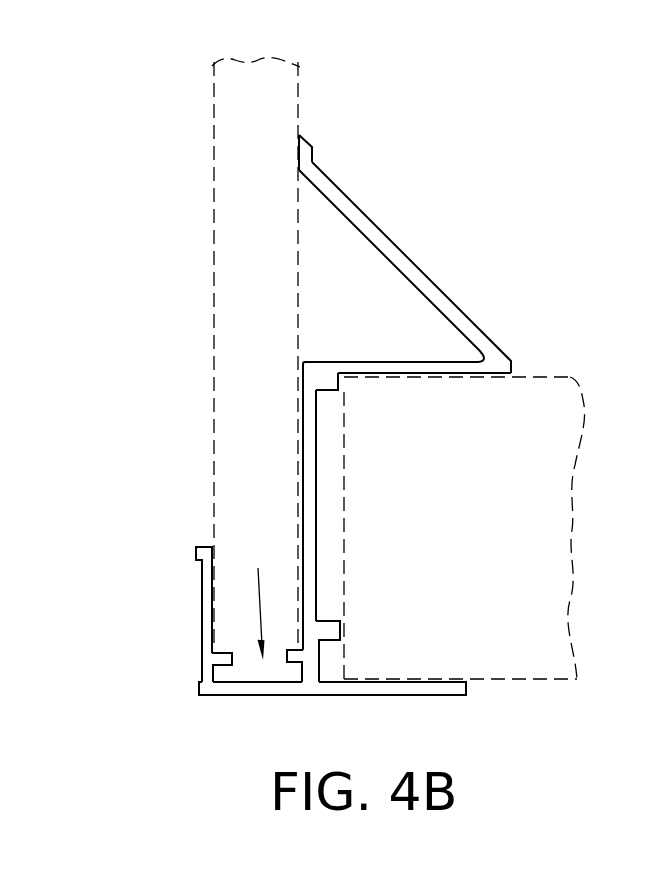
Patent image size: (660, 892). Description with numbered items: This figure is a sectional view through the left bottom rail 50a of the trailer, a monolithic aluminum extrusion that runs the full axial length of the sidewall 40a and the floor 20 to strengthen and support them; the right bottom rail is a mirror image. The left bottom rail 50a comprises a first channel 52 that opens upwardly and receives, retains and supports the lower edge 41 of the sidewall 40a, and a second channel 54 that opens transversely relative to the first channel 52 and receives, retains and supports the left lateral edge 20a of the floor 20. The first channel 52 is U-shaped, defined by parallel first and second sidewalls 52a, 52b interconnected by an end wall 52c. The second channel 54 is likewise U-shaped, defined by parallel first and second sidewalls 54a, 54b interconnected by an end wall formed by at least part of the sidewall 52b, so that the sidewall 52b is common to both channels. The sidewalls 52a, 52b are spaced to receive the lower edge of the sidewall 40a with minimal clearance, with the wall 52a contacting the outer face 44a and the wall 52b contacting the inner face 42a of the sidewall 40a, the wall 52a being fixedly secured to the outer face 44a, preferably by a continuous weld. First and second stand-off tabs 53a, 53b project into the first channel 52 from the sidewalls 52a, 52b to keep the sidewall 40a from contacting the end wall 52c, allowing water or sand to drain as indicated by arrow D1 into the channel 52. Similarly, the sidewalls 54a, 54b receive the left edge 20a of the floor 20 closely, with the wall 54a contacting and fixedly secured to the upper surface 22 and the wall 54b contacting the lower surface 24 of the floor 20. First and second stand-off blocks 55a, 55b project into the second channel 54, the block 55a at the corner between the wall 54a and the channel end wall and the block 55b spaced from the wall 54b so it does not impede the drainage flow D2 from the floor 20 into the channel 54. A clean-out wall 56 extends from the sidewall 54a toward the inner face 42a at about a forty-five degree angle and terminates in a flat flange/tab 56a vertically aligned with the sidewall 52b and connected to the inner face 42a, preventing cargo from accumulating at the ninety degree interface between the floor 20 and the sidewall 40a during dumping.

The floor 20 is at (562, 700).
The left lateral edge of the floor 20a is at (497, 625).
The upper surface of the floor 22 is at (530, 377).
The lower surface of the floor 24 is at (482, 680).
The sidewall 40a is at (262, 354).
The lower edge of sidewall 41 is at (238, 352).
The inner face of sidewall 42a is at (321, 73).
The outer face of sidewall 44a is at (187, 206).
The left bottom rail 50a is at (438, 442).
The first channel 52 is at (217, 615).
The first sidewall of first channel 52a is at (210, 597).
The second sidewall of first channel 52b is at (316, 520).
The end wall of first channel 52c is at (245, 690).
The first stand-off tab 53a is at (222, 657).
The second stand-off tab 53b is at (293, 663).
The second channel 54 is at (500, 546).
The first sidewall of second channel 54a is at (427, 367).
The second sidewall of second channel 54b is at (400, 697).
The first stand-off block 55a is at (327, 390).
The second stand-off block 55b is at (328, 630).
The clean-out wall 56 is at (405, 254).
The flat flange/tab 56a is at (305, 148).
The drainage arrow D1 is at (260, 602).
The drainage flow D2 is at (352, 652).